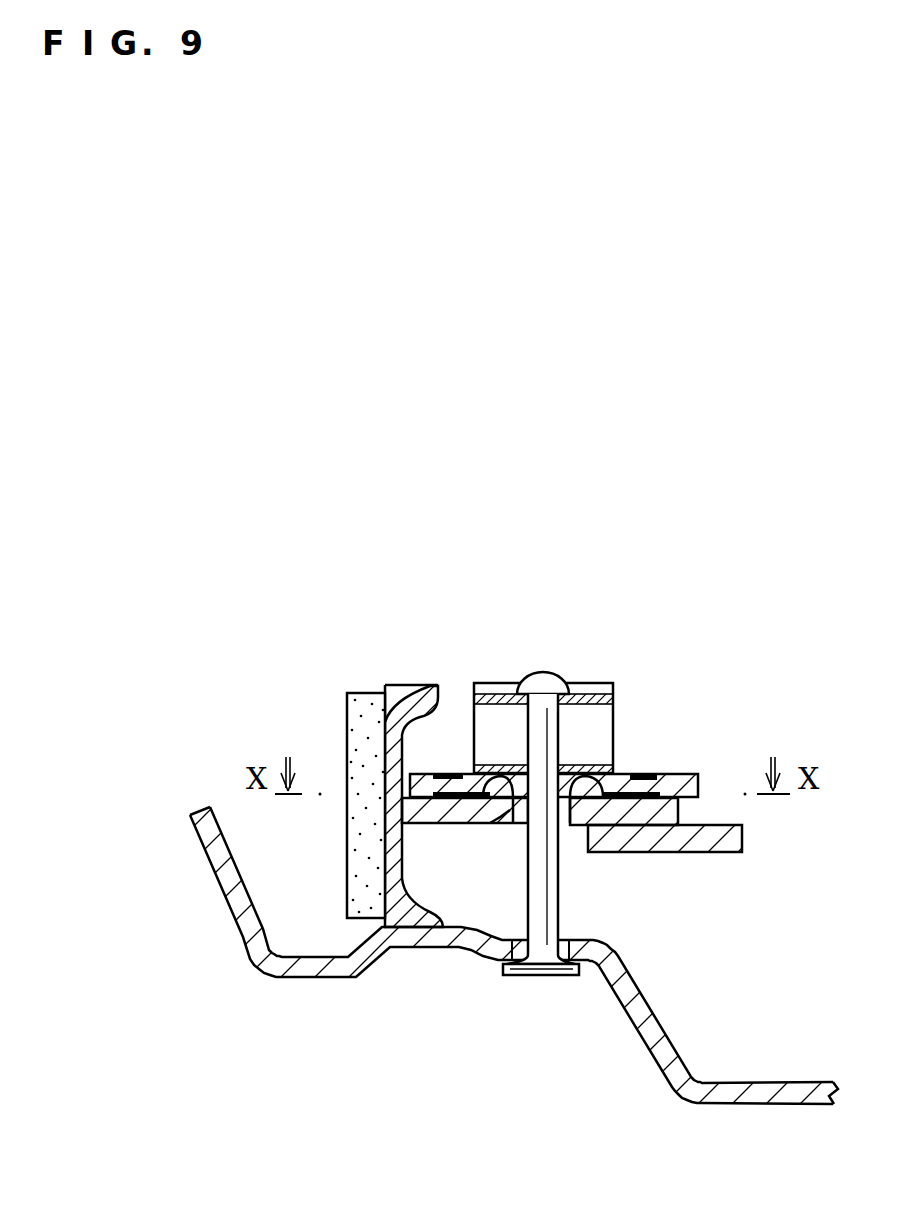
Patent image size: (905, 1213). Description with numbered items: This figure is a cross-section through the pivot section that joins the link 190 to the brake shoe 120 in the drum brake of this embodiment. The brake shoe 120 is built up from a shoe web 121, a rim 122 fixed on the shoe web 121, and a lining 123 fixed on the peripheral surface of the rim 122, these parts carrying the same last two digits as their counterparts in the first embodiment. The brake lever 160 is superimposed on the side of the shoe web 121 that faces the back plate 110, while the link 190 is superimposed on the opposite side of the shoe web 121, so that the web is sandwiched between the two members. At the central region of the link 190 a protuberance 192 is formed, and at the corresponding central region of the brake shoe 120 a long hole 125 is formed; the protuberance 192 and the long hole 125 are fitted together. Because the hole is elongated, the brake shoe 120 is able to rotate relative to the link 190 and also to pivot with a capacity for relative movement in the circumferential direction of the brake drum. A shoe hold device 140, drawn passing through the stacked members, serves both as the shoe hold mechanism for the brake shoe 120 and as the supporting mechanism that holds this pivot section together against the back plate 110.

The back plate 110 is at (824, 1082).
The brake shoe 120 is at (306, 780).
The shoe web 121 is at (438, 817).
The rim 122 is at (392, 870).
The lining 123 is at (347, 713).
The long hole 125 is at (514, 824).
The shoe hold device 140 is at (503, 683).
The brake lever 160 is at (705, 853).
The link 190 is at (690, 773).
The protuberance 192 is at (576, 826).